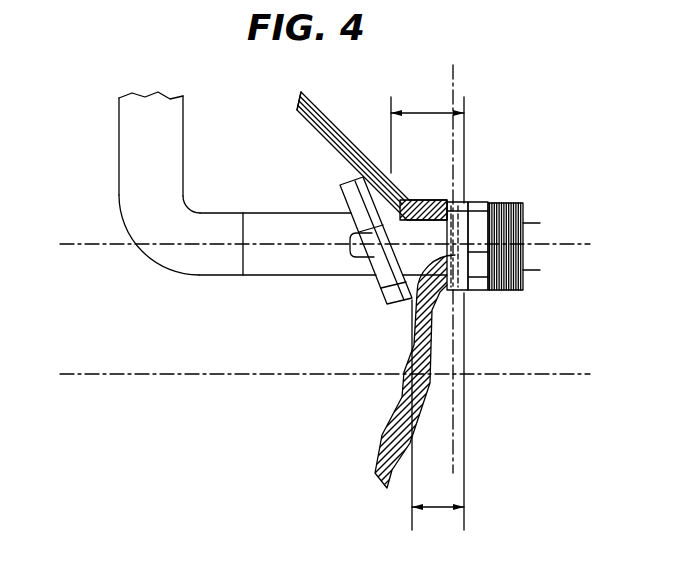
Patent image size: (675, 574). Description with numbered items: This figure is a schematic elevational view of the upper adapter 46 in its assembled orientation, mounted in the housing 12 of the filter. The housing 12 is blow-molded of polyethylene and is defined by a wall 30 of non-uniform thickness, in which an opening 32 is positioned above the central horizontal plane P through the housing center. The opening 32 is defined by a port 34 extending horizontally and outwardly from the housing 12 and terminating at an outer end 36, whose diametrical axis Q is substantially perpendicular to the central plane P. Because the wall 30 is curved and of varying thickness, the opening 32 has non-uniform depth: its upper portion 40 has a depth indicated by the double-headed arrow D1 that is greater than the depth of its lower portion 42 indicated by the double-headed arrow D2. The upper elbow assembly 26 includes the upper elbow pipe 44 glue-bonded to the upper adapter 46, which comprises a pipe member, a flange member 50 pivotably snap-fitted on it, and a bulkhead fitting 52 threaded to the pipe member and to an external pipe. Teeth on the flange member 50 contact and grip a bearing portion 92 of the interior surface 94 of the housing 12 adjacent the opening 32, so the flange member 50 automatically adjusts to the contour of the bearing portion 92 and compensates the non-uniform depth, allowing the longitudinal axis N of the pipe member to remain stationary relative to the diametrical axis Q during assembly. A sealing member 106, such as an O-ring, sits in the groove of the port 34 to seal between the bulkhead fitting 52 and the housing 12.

The housing 12 is at (334, 100).
The upper elbow assembly 26 is at (161, 275).
The wall 30 is at (348, 125).
The opening 32 is at (405, 295).
The port 34 is at (431, 186).
The outer end 36 is at (450, 303).
The upper portion 40 is at (448, 196).
The lower portion 42 is at (455, 257).
The upper elbow pipe 44 is at (119, 145).
The upper adapter 46 is at (294, 206).
The flange member 50 is at (355, 262).
The bulkhead fitting 52 is at (535, 226).
The bearing portion 92 is at (358, 180).
The interior surface 94 is at (309, 119).
The sealing member 106 is at (481, 203).
The longitudinal axis N is at (96, 236).
The central horizontal plane P is at (98, 382).
The diametrical axis Q is at (458, 437).
The depth of upper portion D1 is at (427, 143).
The depth of lower portion D2 is at (438, 419).